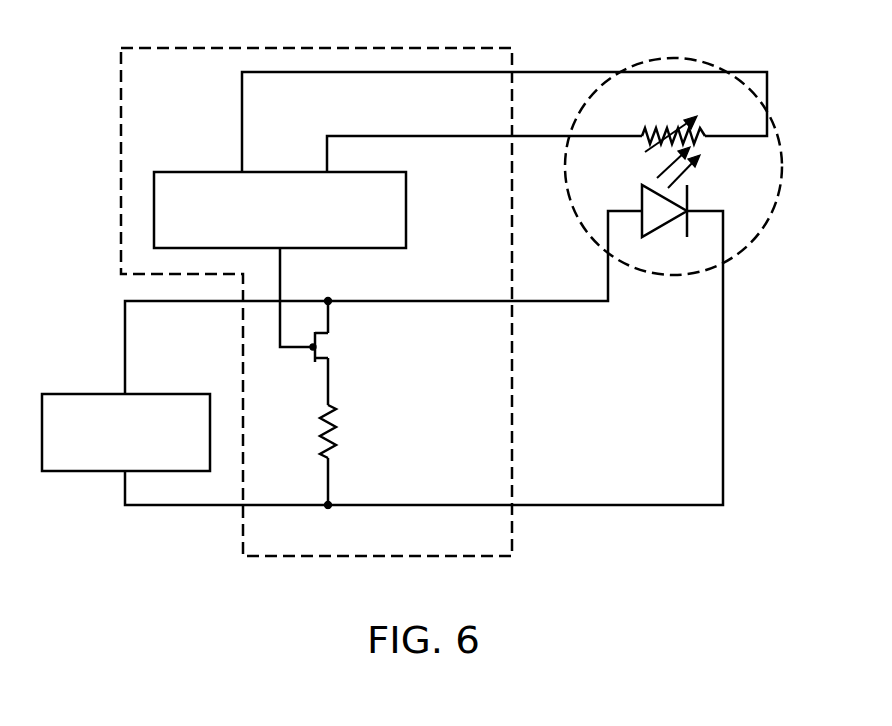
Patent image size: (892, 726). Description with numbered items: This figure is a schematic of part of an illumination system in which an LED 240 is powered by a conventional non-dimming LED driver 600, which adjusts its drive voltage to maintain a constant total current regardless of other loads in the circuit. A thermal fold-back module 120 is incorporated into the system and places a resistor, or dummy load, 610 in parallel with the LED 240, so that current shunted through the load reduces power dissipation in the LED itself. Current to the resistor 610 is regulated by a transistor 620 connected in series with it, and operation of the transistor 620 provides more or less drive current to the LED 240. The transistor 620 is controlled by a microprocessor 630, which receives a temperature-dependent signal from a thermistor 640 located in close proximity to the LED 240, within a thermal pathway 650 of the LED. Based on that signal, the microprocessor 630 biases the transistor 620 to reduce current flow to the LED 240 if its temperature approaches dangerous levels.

The thermal fold-back module 120 is at (233, 48).
The microprocessor 630 is at (189, 172).
The non-dimming LED driver 600 is at (72, 394).
The transistor 620 is at (310, 357).
The resistor 610 is at (320, 432).
The thermal pathway 650 is at (763, 227).
The thermistor 640 is at (645, 151).
The LED 240 is at (670, 226).